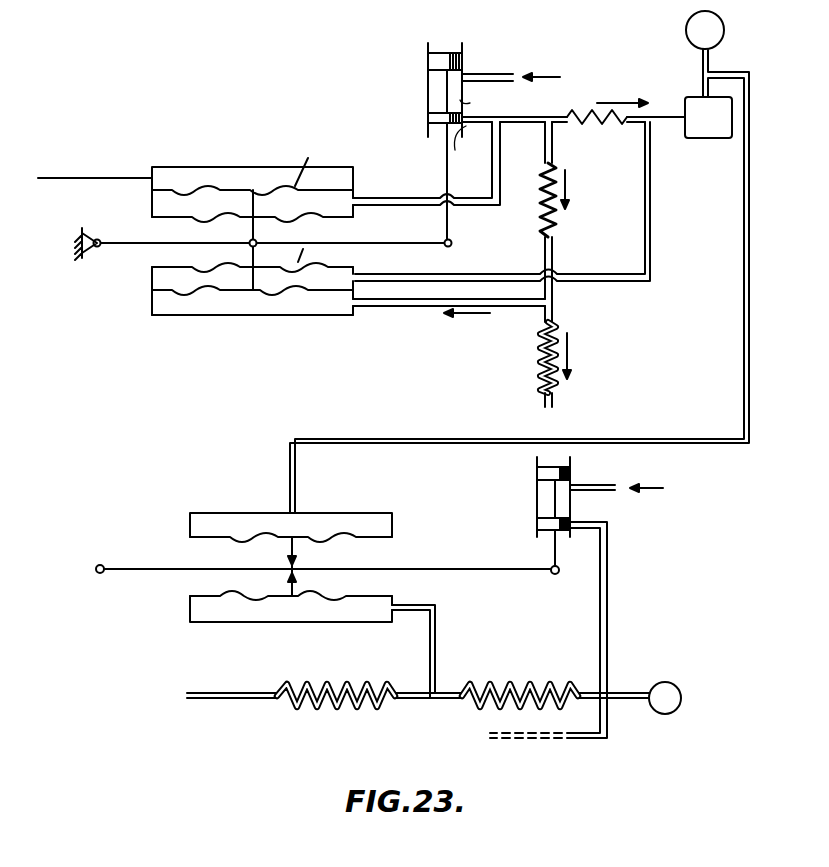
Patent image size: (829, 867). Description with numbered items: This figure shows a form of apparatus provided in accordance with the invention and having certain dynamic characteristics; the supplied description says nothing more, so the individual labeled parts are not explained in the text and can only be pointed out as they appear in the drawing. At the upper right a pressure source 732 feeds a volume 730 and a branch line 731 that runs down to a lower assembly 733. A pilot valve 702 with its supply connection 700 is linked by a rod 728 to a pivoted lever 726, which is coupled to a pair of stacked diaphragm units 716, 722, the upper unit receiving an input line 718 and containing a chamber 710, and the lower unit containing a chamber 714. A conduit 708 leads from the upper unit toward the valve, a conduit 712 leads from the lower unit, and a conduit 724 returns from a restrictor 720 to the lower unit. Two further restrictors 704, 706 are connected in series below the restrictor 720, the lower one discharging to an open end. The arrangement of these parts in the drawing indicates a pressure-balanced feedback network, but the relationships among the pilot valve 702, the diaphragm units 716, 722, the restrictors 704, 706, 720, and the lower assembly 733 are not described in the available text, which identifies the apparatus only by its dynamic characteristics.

The pilot valve supply pressure inlet 700 is at (488, 73).
The pilot valve spool 702 is at (428, 89).
The restrictor r2 704 is at (545, 178).
The restrictor r1 706 is at (548, 374).
The conduit to chamber P2 708 is at (383, 198).
The chamber P2 710 is at (330, 214).
The conduit to chamber P1 712 is at (404, 304).
The chamber C1 714 is at (256, 311).
The upper diaphragm unit 716 is at (208, 170).
The input pressure line Px 718 is at (105, 177).
The restrictor r4 720 is at (623, 128).
The lower diaphragm unit 722 is at (162, 277).
The conduit 724 is at (652, 213).
The pivoted lever 726 is at (168, 242).
The valve actuating rod 728 is at (452, 220).
The capacitance volume C 730 is at (711, 138).
The output conduit 731 is at (747, 370).
The pressure source P 732 is at (725, 31).
The second stage amplifier 733 is at (188, 546).